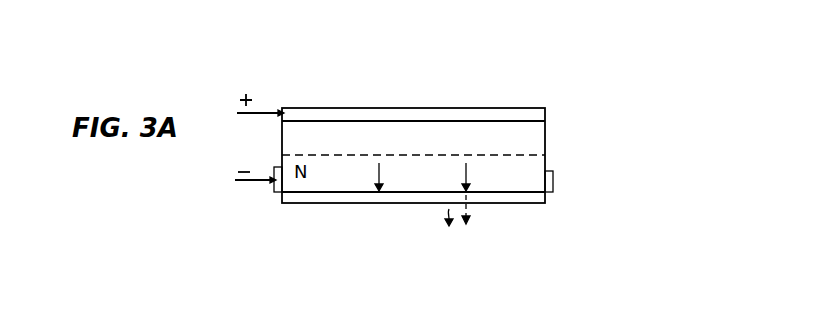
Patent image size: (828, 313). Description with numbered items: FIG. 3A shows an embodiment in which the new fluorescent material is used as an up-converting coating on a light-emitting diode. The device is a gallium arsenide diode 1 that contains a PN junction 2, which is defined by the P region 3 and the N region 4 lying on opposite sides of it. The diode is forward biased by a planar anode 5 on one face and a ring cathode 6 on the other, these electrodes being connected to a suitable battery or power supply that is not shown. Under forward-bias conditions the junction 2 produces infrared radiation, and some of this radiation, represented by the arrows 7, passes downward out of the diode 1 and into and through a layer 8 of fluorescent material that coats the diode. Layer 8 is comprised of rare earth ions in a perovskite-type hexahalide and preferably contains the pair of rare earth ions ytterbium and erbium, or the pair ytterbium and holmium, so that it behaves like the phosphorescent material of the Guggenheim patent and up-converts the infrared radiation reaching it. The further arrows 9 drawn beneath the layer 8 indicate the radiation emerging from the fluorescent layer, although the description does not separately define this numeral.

The gallium arsenide diode 1 is at (540, 140).
The PN junction 2 is at (524, 156).
The P region 3 is at (540, 129).
The N region 4 is at (530, 181).
The planar anode 5 is at (315, 118).
The ring cathode 6 is at (276, 190).
The arrows representing infrared radiation 7 is at (464, 174).
The layer of fluorescent material 8 is at (313, 196).
The transmitted radiation arrows 9 is at (470, 212).